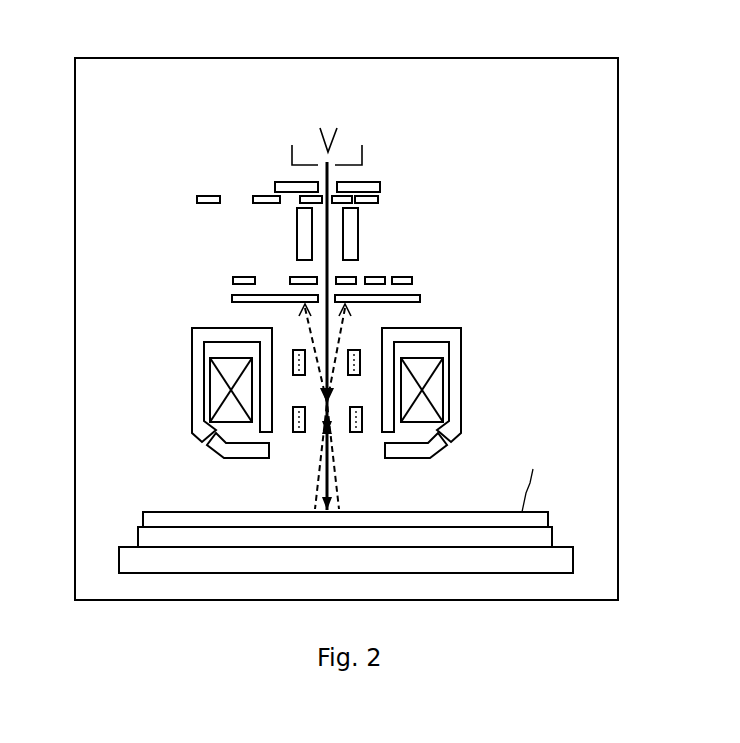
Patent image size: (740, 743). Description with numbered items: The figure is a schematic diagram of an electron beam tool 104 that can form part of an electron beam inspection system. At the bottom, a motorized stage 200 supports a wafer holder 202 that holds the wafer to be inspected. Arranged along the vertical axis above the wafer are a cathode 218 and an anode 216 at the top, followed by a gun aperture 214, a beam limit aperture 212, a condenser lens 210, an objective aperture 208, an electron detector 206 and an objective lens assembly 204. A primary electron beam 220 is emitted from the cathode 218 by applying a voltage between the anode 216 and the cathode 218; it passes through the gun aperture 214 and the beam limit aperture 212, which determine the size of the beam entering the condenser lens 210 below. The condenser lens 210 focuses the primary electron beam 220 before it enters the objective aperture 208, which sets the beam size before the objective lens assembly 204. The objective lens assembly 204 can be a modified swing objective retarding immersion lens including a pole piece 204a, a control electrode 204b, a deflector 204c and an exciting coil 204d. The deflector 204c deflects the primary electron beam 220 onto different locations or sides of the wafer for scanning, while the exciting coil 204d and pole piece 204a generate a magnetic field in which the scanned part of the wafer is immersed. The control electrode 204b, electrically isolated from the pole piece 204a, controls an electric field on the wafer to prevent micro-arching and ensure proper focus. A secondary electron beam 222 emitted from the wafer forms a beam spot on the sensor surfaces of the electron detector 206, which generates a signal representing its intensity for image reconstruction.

The electron beam tool 104 is at (346, 304).
The motorized stage 200 is at (369, 536).
The wafer holder 202 is at (366, 497).
The objective lens assembly 204 is at (376, 398).
The pole piece 204a is at (361, 371).
The control electrode 204b is at (350, 464).
The deflector 204c is at (366, 367).
The exciting coil 204d is at (326, 409).
The electron detector 206 is at (371, 287).
The objective aperture 208 is at (379, 260).
The condenser lens 210 is at (384, 234).
The beam limit aperture 212 is at (338, 195).
The gun aperture 214 is at (377, 177).
The anode 216 is at (363, 146).
The cathode 218 is at (365, 120).
The primary electron beam 220 is at (360, 336).
The secondary electron beam 222 is at (302, 406).